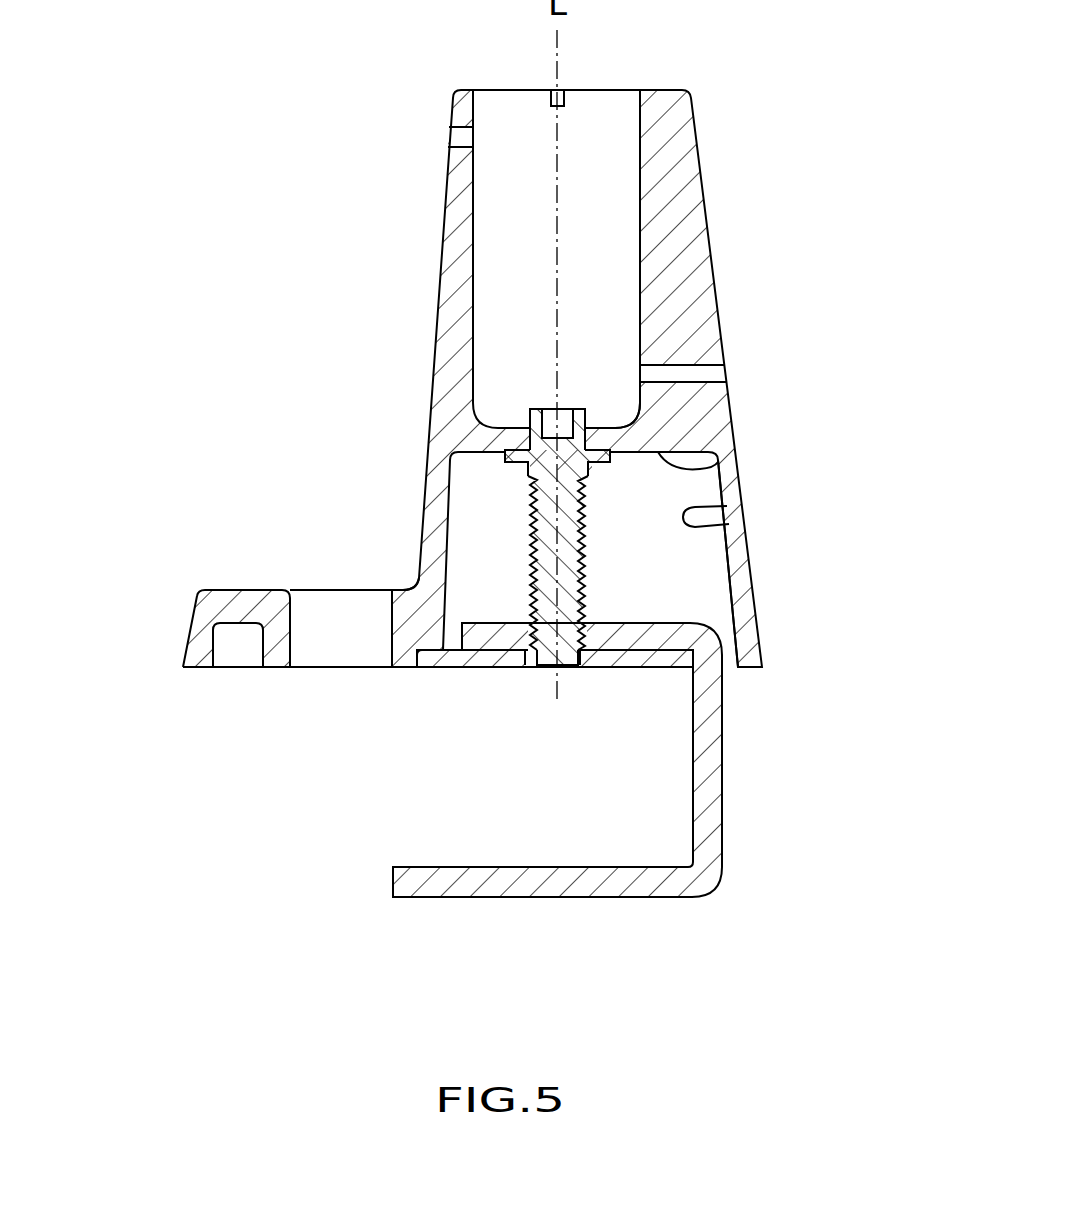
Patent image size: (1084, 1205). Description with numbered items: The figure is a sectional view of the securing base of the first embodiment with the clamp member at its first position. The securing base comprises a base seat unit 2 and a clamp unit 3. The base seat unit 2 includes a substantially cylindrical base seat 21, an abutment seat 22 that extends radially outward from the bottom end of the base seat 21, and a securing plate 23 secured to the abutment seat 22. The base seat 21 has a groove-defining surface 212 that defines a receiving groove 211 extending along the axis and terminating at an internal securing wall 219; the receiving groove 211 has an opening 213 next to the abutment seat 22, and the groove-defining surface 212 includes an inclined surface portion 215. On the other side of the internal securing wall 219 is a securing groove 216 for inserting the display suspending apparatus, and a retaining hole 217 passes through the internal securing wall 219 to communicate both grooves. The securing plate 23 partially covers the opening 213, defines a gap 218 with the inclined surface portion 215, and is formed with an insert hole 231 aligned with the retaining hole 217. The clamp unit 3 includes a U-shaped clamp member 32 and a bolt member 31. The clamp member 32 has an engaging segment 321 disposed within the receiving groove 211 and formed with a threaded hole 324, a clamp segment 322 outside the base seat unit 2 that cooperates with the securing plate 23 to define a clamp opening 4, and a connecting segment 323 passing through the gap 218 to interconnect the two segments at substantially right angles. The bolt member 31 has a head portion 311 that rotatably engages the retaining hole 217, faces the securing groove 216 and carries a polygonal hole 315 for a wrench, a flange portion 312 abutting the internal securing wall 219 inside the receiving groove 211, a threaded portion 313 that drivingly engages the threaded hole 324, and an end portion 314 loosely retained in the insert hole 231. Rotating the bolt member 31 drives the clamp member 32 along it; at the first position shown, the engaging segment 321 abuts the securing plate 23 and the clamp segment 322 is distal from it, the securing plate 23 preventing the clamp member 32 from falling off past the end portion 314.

The base seat unit 2 is at (696, 89).
The base seat 21 is at (577, 378).
The abutment seat 22 is at (213, 612).
The securing plate 23 is at (463, 657).
The insert hole 231 is at (533, 658).
The receiving groove 211 is at (477, 492).
The groove-defining surface 212 is at (695, 469).
The opening 213 is at (422, 650).
The inclined surface portion 215 is at (697, 508).
The securing groove 216 is at (508, 108).
The retaining hole 217 is at (528, 437).
The gap 218 is at (735, 668).
The internal securing wall 219 is at (598, 430).
The clamp unit 3 is at (697, 905).
The bolt member 31 is at (530, 410).
The head portion 311 is at (557, 429).
The flange portion 312 is at (605, 448).
The threaded portion 313 is at (570, 567).
The end portion 314 is at (568, 655).
The polygonal hole 315 is at (566, 408).
The clamp member 32 is at (708, 778).
The engaging segment 321 is at (647, 621).
The clamp segment 322 is at (553, 888).
The connecting segment 323 is at (705, 760).
The threaded hole 324 is at (523, 628).
The clamp opening 4 is at (430, 830).